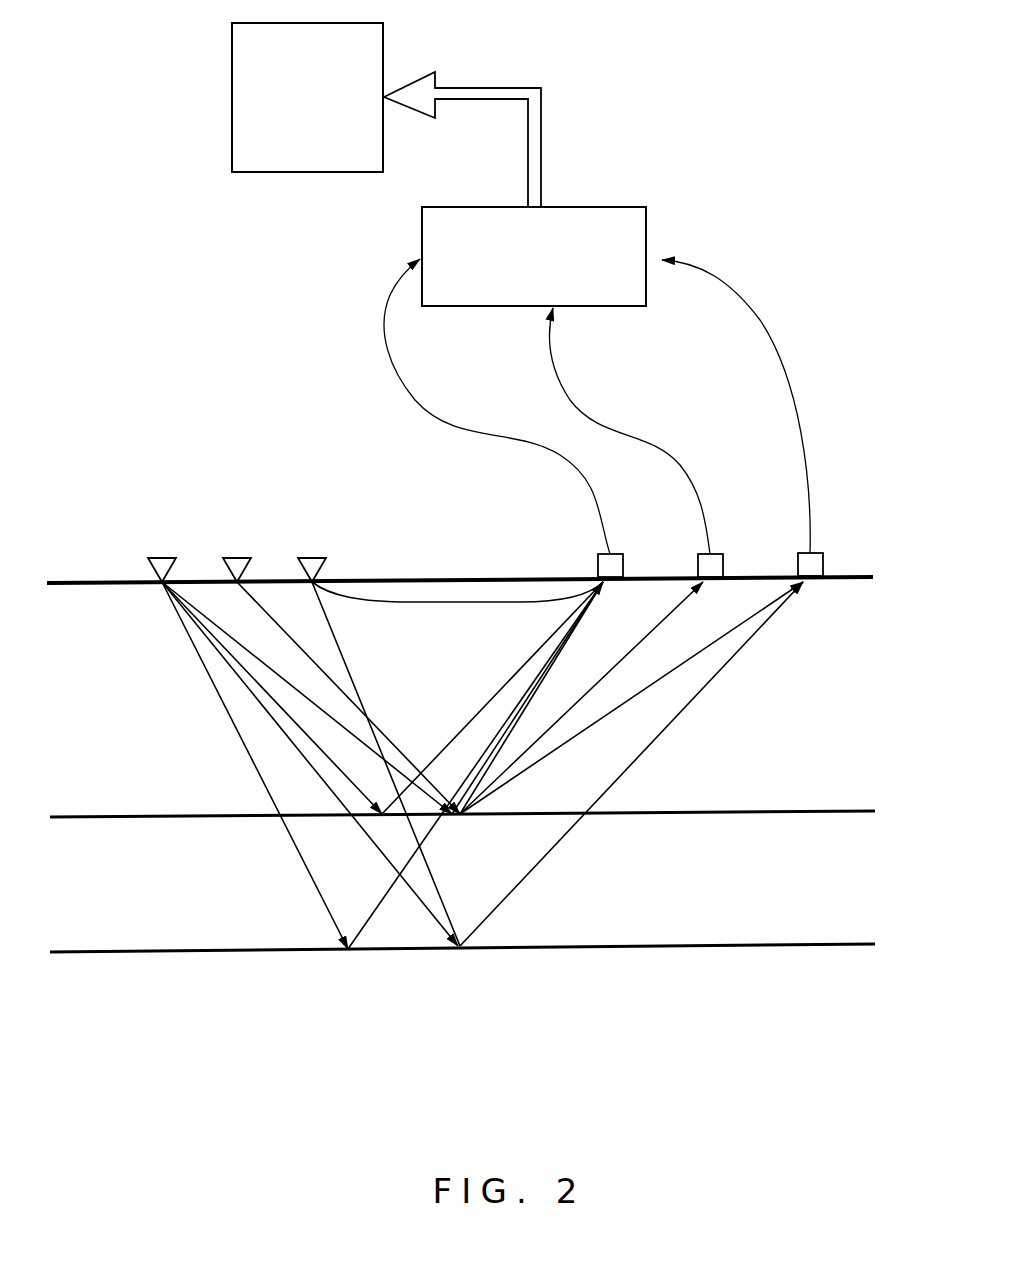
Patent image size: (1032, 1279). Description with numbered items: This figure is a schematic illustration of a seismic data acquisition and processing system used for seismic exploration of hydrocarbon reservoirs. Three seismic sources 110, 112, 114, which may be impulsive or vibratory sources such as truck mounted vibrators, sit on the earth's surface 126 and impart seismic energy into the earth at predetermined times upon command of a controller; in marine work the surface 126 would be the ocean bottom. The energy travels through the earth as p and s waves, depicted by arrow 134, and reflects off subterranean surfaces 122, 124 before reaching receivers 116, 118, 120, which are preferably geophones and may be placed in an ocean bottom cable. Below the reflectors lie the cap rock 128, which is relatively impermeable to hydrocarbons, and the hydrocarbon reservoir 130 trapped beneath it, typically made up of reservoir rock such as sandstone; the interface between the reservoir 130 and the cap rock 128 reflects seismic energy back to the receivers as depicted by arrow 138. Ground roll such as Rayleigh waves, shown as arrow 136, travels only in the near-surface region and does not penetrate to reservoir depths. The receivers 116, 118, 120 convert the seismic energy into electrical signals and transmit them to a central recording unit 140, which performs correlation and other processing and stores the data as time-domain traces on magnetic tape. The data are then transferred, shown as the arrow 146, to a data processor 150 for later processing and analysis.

The seismic source 110 is at (157, 558).
The seismic source 112 is at (232, 558).
The seismic source 114 is at (307, 558).
The receiver 116 is at (597, 570).
The receiver 118 is at (697, 570).
The receiver 120 is at (825, 570).
The subterranean surface 122 is at (162, 815).
The subterranean surface 124 is at (187, 950).
The earth surface 126 is at (527, 577).
The cap rock 128 is at (637, 902).
The hydrocarbon reservoir 130 is at (615, 1018).
The arrow 134 is at (212, 686).
The arrow 136 is at (420, 600).
The arrow 138 is at (677, 717).
The central recording unit 140 is at (436, 249).
The data transfer connection 146 is at (483, 93).
The data processor 150 is at (275, 150).